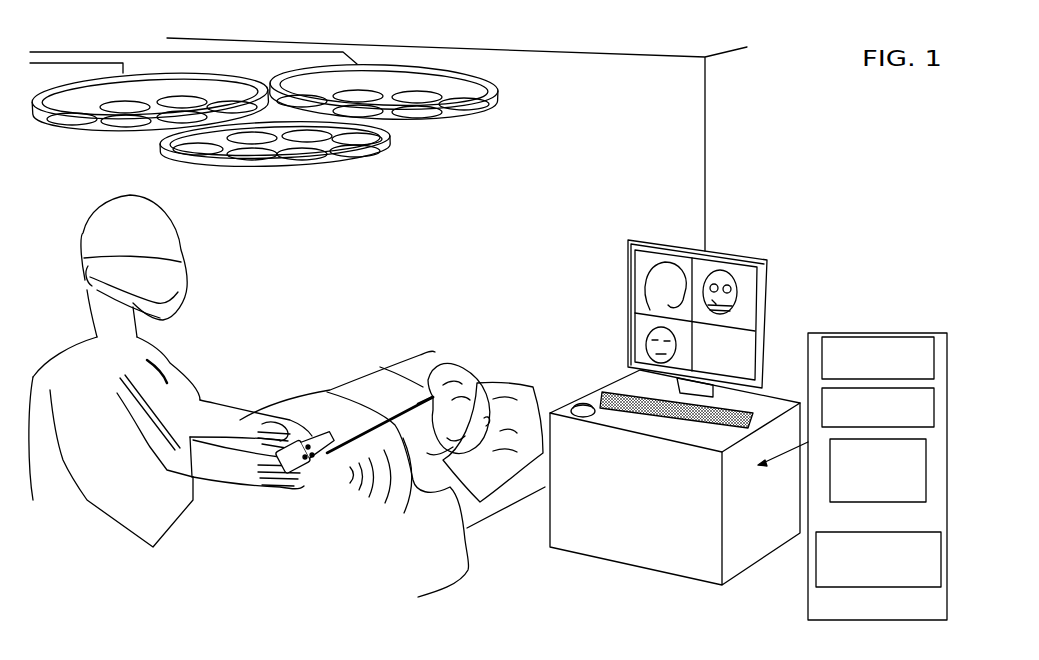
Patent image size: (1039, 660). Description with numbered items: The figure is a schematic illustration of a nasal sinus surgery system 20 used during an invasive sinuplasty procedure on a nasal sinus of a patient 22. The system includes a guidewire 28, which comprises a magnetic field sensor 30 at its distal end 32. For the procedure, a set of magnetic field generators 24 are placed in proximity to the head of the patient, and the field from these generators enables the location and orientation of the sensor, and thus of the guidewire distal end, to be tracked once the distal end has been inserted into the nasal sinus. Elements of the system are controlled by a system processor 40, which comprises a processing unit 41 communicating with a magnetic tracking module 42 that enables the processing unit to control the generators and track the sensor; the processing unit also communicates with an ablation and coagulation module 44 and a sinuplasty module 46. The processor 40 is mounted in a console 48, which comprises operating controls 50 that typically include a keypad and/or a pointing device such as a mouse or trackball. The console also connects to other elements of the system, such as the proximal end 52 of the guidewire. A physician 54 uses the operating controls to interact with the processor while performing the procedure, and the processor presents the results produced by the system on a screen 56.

The nasal sinus surgery system 20 is at (680, 167).
The patient 22 is at (477, 530).
The magnetic field generators 24 is at (400, 348).
The guidewire 28 is at (375, 428).
The magnetic field sensor 30 is at (398, 298).
The distal end 32 is at (433, 395).
The system processor 40 is at (902, 333).
The processing unit 41 is at (855, 337).
The magnetic tracking module 42 is at (870, 502).
The ablation and coagulation module 44 is at (815, 563).
The sinuplasty module 46 is at (822, 408).
The console 48 is at (776, 398).
The operating controls 50 is at (600, 403).
The proximal end 52 is at (300, 440).
The physician 54 is at (68, 337).
The screen 56 is at (735, 255).